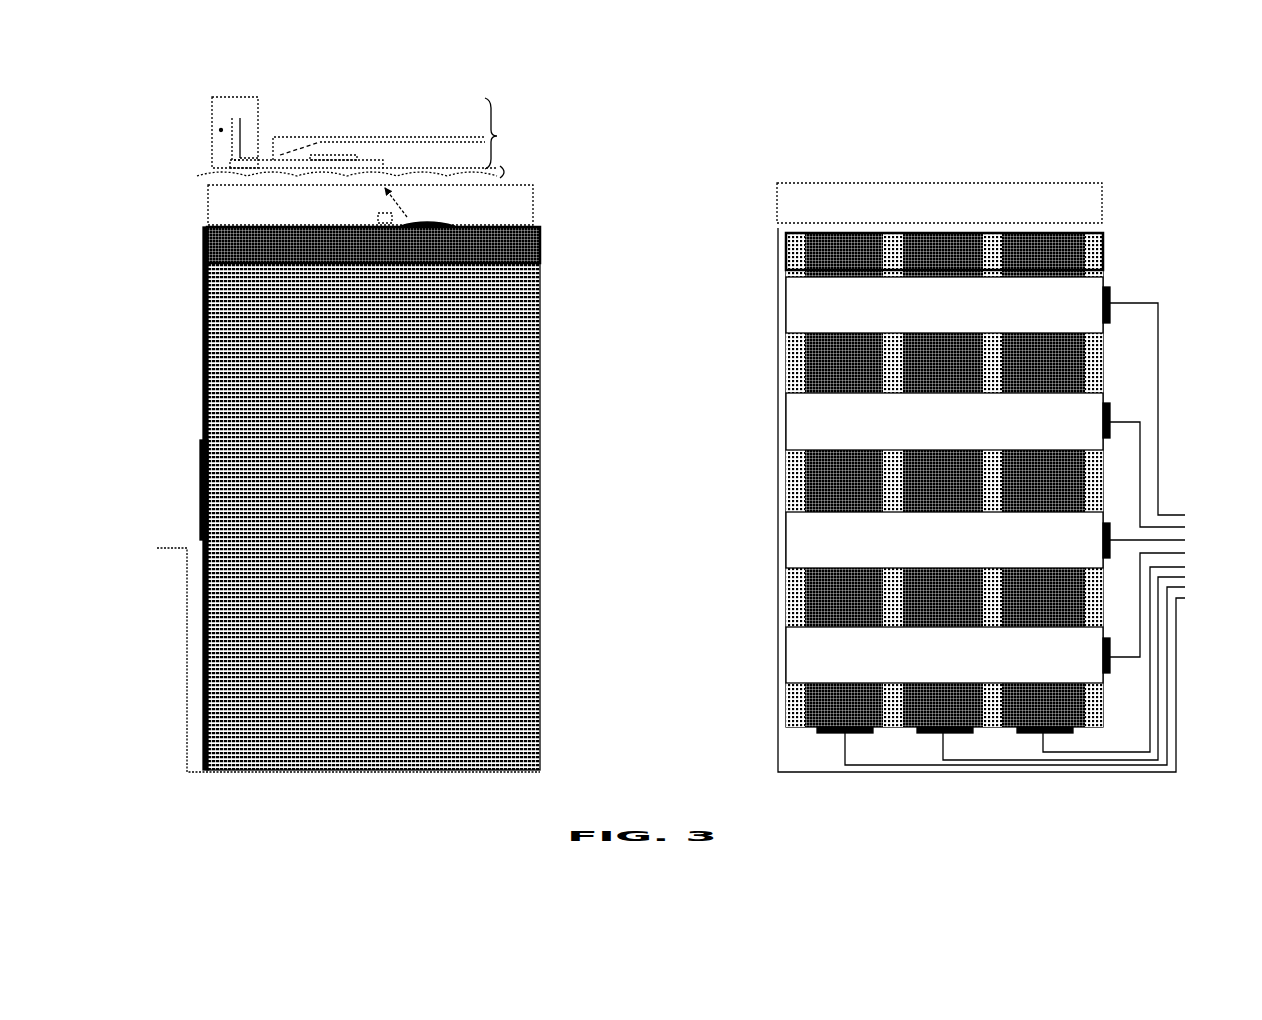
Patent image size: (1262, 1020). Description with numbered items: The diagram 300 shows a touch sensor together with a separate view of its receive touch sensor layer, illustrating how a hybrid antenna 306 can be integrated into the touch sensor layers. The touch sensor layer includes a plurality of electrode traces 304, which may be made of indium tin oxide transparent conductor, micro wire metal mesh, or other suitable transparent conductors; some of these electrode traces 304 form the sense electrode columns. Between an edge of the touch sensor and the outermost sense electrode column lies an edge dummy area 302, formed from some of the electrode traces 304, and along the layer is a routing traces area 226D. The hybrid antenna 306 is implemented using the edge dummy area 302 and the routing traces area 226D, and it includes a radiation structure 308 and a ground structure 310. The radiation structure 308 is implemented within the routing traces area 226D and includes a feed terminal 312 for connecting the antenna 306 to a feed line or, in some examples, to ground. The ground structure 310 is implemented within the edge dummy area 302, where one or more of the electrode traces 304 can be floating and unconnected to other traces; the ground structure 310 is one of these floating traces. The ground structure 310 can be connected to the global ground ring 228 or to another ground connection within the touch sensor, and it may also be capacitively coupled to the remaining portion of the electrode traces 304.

The diagram 300 is at (1207, 133).
The edge dummy area 302 is at (708, 245).
The electrode traces 304 is at (570, 472).
The hybrid antenna 306 is at (207, 108).
The radiation structure 308 is at (378, 133).
The ground structure 310 is at (367, 172).
The feed terminal 312 is at (207, 132).
The routing traces area 226D is at (710, 194).
The global ground ring 228 is at (696, 501).